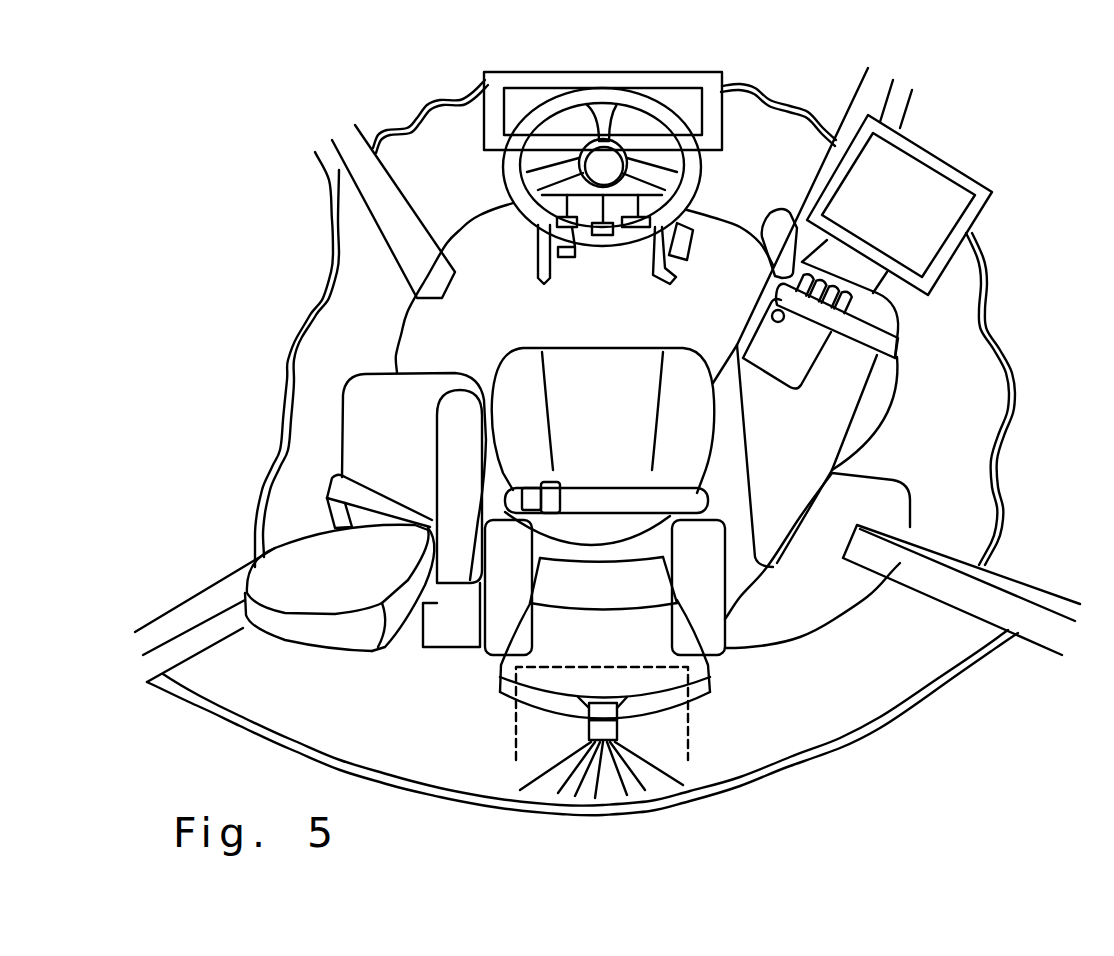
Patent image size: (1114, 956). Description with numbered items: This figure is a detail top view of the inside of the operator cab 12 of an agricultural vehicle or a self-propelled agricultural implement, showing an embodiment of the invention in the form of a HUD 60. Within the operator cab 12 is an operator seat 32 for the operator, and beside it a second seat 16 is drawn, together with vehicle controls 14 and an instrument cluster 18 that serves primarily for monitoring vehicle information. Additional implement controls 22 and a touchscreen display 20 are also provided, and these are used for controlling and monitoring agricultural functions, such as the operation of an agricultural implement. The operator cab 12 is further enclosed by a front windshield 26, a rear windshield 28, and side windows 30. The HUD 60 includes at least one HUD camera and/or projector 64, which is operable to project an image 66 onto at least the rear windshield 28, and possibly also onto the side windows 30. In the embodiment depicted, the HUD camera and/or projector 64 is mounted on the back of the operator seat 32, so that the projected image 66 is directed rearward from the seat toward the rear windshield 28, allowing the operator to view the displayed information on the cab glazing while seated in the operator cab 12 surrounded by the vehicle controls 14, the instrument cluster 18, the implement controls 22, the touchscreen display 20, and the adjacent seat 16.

The operator cab 12 is at (264, 369).
The vehicle controls 14 is at (613, 158).
The instructor seat 16 is at (448, 648).
The instrument cluster 18 is at (688, 90).
The touchscreen display 20 is at (923, 187).
The implement controls 22 is at (895, 327).
The front windshield 26 is at (440, 163).
The rear windshield 28 is at (893, 720).
The side windows 30 is at (328, 247).
The operator seat 32 is at (617, 449).
The HUD 60 is at (618, 730).
The HUD camera and/or projector 64 is at (618, 735).
The image 66 is at (618, 788).